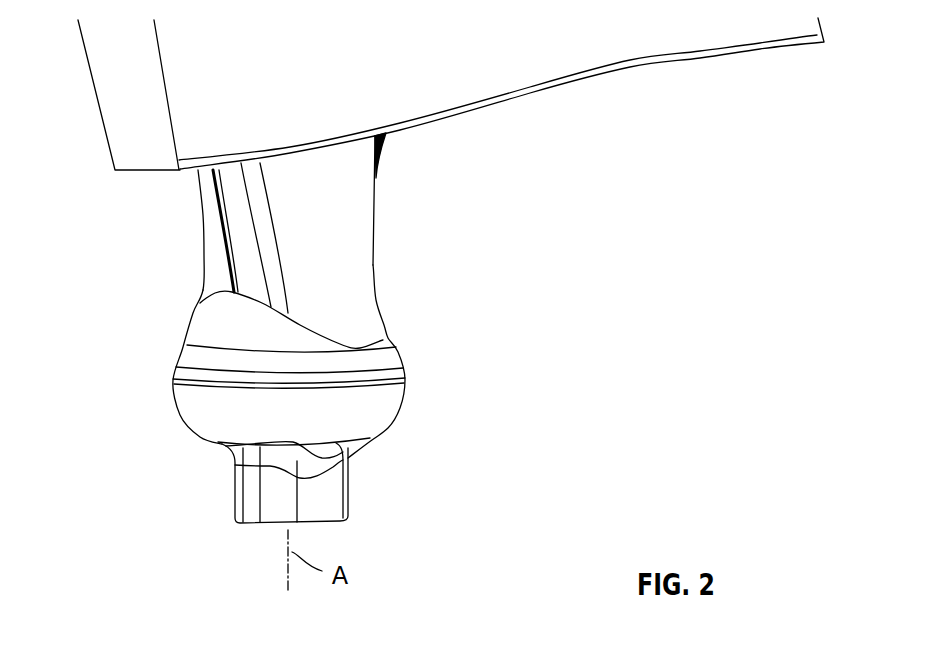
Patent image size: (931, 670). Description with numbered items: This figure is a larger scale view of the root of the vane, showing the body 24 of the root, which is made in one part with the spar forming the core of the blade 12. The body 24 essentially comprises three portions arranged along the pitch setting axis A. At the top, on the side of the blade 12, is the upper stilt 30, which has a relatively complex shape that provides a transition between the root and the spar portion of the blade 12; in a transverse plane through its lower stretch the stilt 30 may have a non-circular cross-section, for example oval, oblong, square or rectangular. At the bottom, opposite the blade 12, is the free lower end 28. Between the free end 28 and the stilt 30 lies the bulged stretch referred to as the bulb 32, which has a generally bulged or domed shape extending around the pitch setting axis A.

The blade 12 is at (580, 93).
The body 24 is at (388, 299).
The upper stilt 30 is at (216, 252).
The bulb 32 is at (392, 405).
The free lower end 28 is at (345, 513).